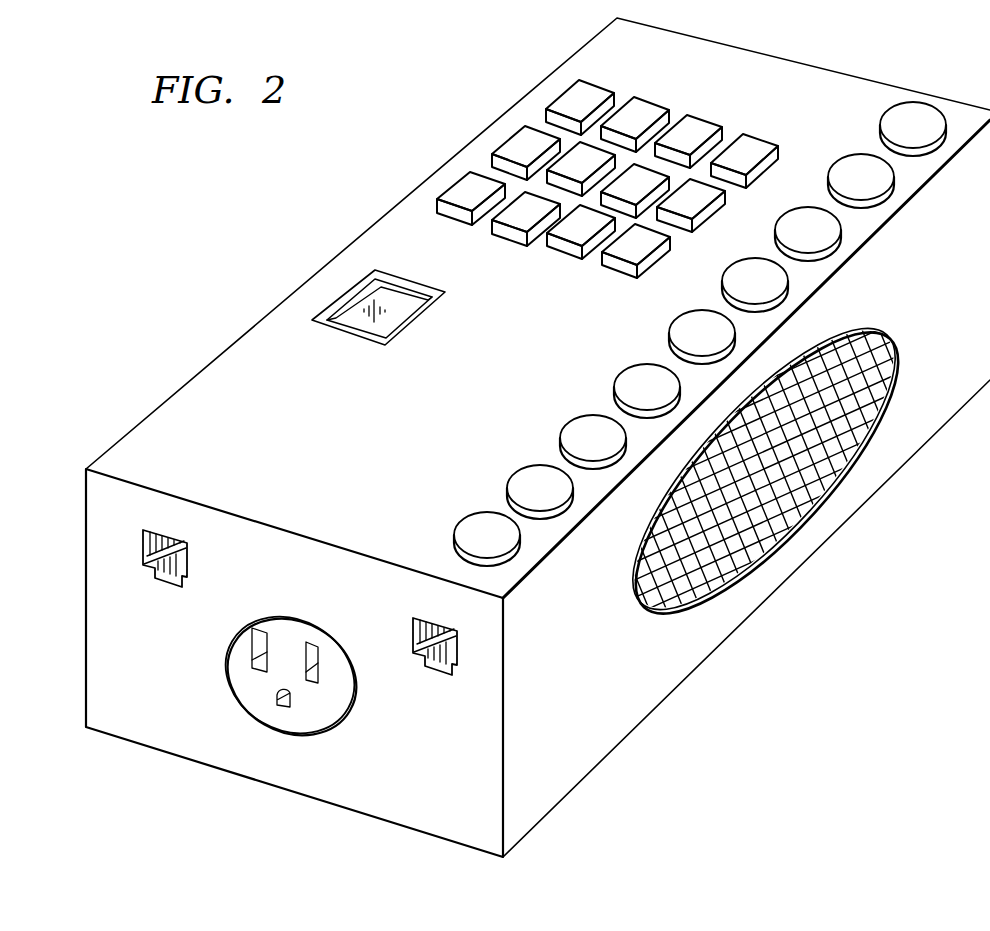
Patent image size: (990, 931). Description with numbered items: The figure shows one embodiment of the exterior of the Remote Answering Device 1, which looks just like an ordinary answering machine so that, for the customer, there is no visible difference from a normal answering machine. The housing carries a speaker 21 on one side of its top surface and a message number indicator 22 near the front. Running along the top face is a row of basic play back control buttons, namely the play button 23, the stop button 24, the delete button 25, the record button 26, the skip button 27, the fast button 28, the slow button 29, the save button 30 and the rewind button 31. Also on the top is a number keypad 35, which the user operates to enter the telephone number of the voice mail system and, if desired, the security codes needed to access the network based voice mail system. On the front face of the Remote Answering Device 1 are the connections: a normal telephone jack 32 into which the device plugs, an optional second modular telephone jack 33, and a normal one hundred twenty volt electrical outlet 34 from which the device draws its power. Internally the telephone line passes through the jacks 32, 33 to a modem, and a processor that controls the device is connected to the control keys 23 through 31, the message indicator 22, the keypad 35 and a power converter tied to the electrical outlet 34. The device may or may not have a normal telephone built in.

The Remote Answering Device 1 is at (208, 152).
The speaker 21 is at (888, 338).
The message number indicator 22 is at (399, 278).
The play button 23 is at (455, 536).
The stop button 24 is at (508, 485).
The delete button 25 is at (561, 432).
The record button 26 is at (615, 380).
The skip button 27 is at (669, 329).
The fast button 28 is at (724, 277).
The slow button 29 is at (776, 225).
The save button 30 is at (830, 172).
The rewind button 31 is at (880, 118).
The telephone jack 32 is at (166, 590).
The second RJ-11 jack 33 is at (436, 678).
The electrical outlet 34 is at (321, 628).
The number keypad 35 is at (780, 133).